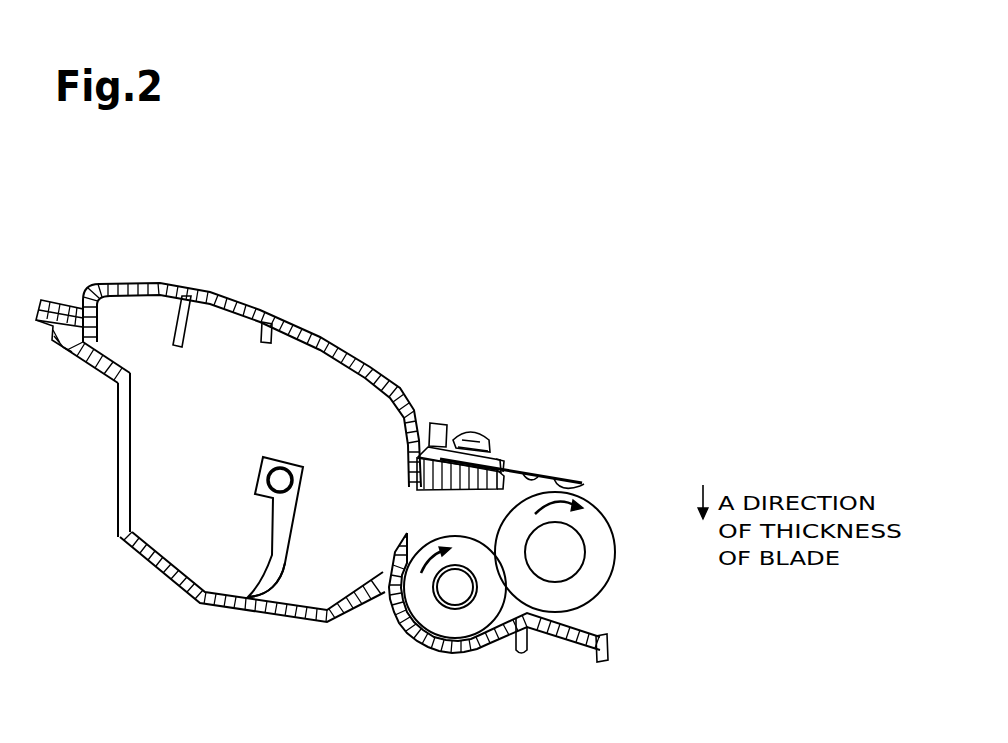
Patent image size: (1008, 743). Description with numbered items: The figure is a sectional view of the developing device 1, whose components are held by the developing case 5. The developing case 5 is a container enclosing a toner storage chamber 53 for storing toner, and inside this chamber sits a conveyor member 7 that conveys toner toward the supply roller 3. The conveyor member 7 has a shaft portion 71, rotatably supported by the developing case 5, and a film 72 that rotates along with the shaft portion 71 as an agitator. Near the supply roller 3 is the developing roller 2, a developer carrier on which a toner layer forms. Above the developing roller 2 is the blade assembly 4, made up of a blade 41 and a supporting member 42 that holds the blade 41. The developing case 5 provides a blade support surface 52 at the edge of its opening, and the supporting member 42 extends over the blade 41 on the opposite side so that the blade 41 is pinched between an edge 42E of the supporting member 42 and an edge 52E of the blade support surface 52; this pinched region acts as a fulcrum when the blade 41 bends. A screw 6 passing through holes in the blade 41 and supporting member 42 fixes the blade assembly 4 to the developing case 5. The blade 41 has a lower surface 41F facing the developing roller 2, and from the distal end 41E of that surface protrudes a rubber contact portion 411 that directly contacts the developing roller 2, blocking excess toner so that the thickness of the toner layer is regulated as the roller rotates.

The developing device 1 is at (270, 254).
The developing roller 2 is at (605, 583).
The supply roller 3 is at (455, 628).
The blade assembly 4 is at (514, 435).
The developing case 5 is at (104, 285).
The screw 6 is at (470, 436).
The conveyor member 7 is at (264, 527).
The blade 41 is at (565, 454).
The distal end 41E is at (585, 482).
The lower surface 41F is at (537, 472).
The contact portion 411 is at (588, 486).
The supporting member 42 is at (448, 427).
The edge of the supporting member 42E is at (502, 452).
The blade support surface 52 is at (433, 494).
The edge of the support surface 52E is at (505, 491).
The toner storage chamber 53 is at (197, 412).
The shaft portion 71 is at (265, 479).
The film 72 is at (281, 578).